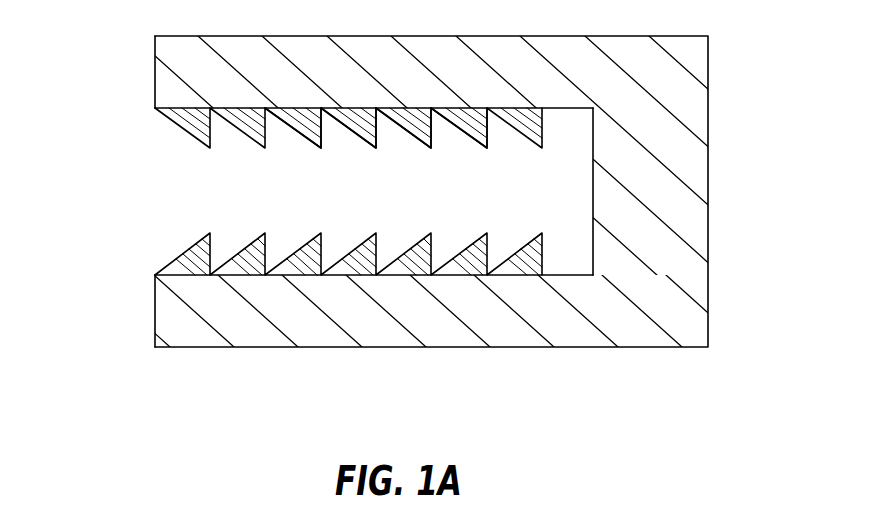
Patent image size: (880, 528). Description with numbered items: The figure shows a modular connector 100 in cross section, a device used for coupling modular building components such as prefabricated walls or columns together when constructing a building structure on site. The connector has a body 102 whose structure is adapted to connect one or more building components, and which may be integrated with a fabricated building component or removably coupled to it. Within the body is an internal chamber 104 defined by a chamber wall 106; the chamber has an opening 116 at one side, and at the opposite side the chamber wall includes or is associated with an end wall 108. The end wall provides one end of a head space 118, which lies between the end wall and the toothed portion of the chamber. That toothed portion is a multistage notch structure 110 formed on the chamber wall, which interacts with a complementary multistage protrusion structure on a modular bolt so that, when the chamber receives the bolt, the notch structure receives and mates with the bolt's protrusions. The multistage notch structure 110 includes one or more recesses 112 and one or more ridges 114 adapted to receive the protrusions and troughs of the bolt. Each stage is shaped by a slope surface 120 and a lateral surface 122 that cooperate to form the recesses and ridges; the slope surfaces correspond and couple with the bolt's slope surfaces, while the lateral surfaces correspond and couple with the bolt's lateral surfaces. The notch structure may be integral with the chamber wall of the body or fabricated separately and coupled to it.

The modular connector 100 is at (267, 397).
The body 102 is at (650, 310).
The internal chamber 104 is at (450, 205).
The chamber wall 106 is at (517, 277).
The end wall 108 is at (592, 190).
The multistage notch structure 110 is at (268, 157).
The recess 112 is at (343, 149).
The ridge 114 is at (490, 148).
The opening 116 is at (145, 212).
The head space 118 is at (572, 137).
The slope surface 120 is at (347, 127).
The lateral surface 122 is at (382, 124).